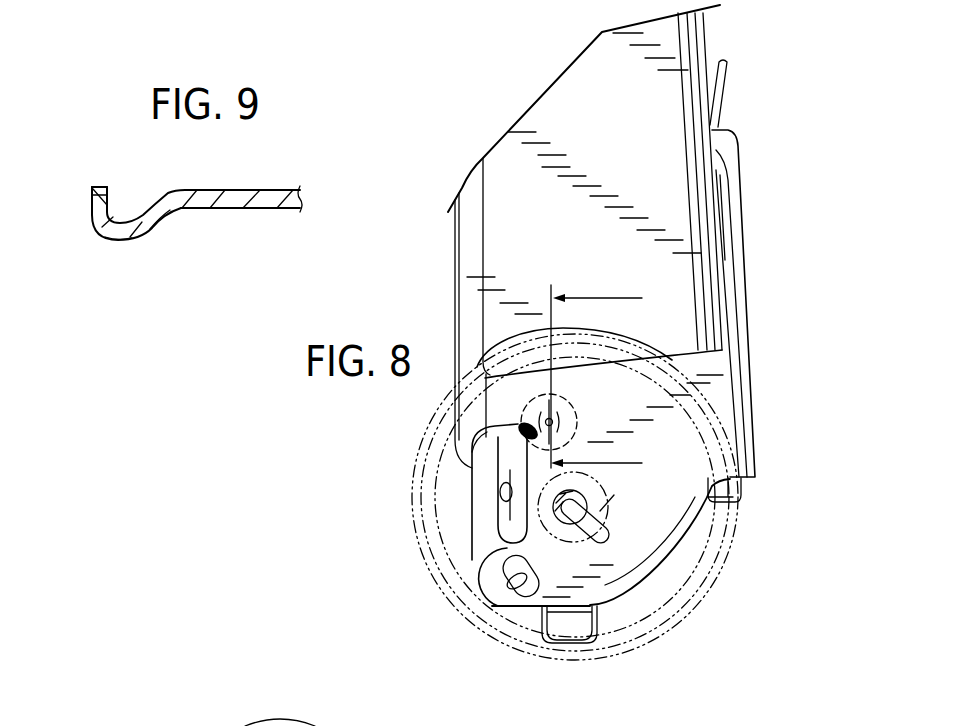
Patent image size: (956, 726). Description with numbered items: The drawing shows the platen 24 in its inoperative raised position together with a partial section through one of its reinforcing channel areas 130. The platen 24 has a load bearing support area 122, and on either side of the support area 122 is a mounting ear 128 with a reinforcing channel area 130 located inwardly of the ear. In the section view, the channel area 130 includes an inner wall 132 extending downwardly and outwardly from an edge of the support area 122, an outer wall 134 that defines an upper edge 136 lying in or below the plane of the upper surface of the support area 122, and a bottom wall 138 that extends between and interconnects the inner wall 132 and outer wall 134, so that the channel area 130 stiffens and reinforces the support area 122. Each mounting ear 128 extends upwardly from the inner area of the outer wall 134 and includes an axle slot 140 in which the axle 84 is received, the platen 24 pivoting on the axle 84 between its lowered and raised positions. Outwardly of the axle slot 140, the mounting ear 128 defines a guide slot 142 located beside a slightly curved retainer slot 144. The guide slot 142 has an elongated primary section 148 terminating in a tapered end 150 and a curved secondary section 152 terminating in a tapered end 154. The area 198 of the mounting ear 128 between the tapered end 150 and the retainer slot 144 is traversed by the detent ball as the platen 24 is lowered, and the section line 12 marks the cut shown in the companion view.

In FIG. 8, the section line 12 is at (609, 384).
In FIG. 8, the platen 24 is at (770, 367).
In FIG. 8, the axle 84 is at (592, 509).
In FIG. 9, the support area 122 is at (231, 190).
In FIG. 8, the mounting ear 128 is at (464, 512).
In FIG. 9, the reinforcing channel area 130 is at (89, 228).
In FIG. 9, the inner wall 132 is at (169, 212).
In FIG. 9, the outer wall 134 is at (91, 198).
In FIG. 9, the upper edge 136 is at (102, 185).
In FIG. 9, the bottom wall 138 is at (132, 241).
In FIG. 8, the axle slot 140 is at (609, 524).
In FIG. 8, the guide slot 142 is at (500, 487).
In FIG. 8, the retainer slot 144 is at (502, 608).
In FIG. 8, the primary section 148 is at (516, 512).
In FIG. 8, the tapered end 150 is at (479, 552).
In FIG. 8, the secondary section 152 is at (468, 453).
In FIG. 8, the tapered end 154 is at (520, 422).
In FIG. 8, the area between end and retainer slot 198 is at (476, 593).